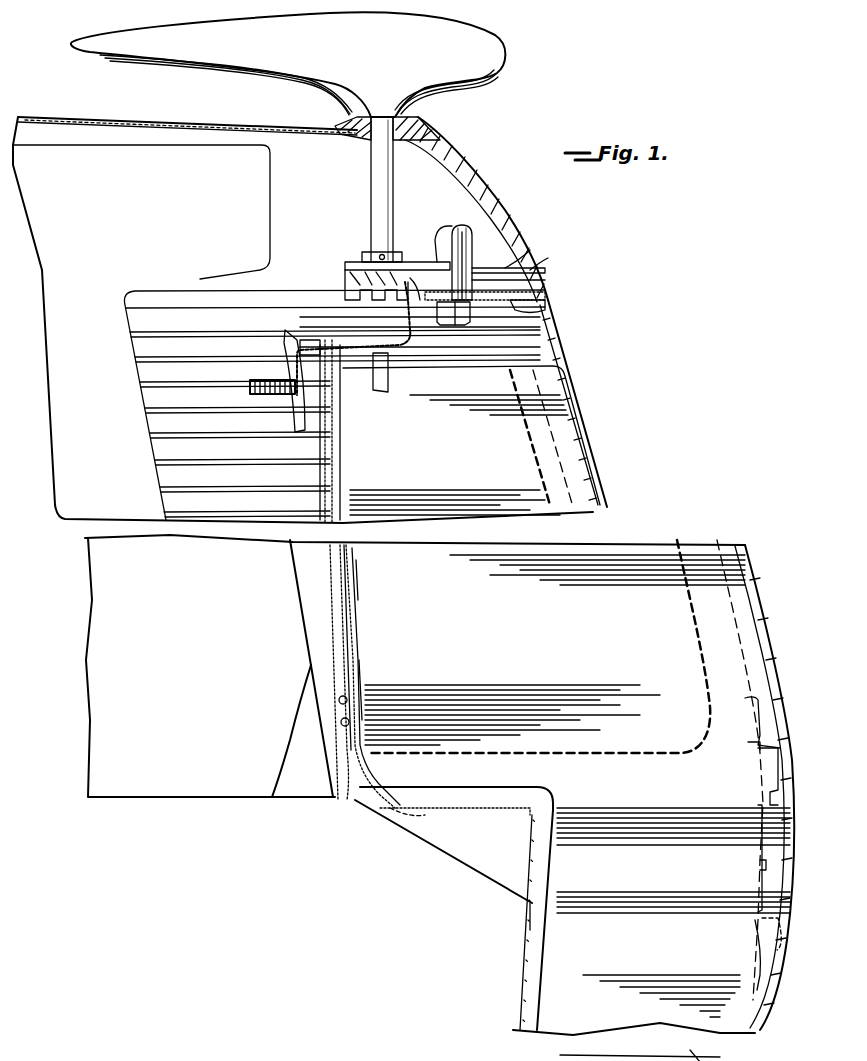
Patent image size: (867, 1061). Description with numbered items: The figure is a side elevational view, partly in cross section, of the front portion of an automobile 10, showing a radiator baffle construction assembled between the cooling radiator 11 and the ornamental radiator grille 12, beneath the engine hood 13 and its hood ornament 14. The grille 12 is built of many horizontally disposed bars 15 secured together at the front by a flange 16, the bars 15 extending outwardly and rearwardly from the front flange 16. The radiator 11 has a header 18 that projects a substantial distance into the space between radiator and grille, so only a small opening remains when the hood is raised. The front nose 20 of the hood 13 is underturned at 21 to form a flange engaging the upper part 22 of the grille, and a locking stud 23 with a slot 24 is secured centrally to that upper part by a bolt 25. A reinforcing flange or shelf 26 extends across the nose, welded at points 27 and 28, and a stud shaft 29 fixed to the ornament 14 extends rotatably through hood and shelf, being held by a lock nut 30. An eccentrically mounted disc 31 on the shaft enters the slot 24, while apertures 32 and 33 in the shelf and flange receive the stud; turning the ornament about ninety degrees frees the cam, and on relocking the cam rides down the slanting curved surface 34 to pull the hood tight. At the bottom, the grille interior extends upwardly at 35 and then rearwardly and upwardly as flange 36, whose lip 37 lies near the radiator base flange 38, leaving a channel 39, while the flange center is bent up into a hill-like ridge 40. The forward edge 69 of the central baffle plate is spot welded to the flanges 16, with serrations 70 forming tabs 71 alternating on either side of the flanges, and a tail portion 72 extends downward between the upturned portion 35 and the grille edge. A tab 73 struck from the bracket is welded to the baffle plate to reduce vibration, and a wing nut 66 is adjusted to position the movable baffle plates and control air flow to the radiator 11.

The automobile 10 is at (552, 263).
The cooling radiator 11 is at (105, 557).
The ornamental radiator grille 12 is at (500, 352).
The engine hood 13 is at (140, 122).
The hood ornament 14 is at (462, 53).
The horizontally disposed bars 15 is at (148, 432).
The front flange 16 is at (540, 340).
The header 18 is at (228, 170).
The front nose 20 is at (455, 195).
The underturned flange 21 is at (545, 285).
The upper part 22 is at (545, 303).
The locking stud 23 is at (465, 248).
The slot 24 is at (437, 257).
The bolt 25 is at (450, 318).
The flange or shelf 26 is at (520, 266).
The welding point 27 is at (408, 288).
The welding point 28 is at (540, 274).
The stud shaft 29 is at (378, 180).
The lock nut 30 is at (372, 280).
The eccentrically mounted disc 31 is at (410, 268).
The aperture 32 is at (472, 275).
The aperture 33 is at (485, 285).
The slanting curved surface 34 is at (463, 245).
The upturned portion 35 is at (532, 925).
The rearwardly extending flange 36 is at (445, 855).
The lip 37 is at (358, 812).
The base flange 38 is at (332, 812).
The channel 39 is at (345, 812).
The hill-like ridge 40 is at (495, 803).
The wing nut 66 is at (296, 425).
The forward edge 69 is at (578, 437).
The serrations 70 is at (755, 733).
The tabs 71 is at (778, 782).
The tail portion 72 is at (568, 958).
The tab 73 is at (372, 385).